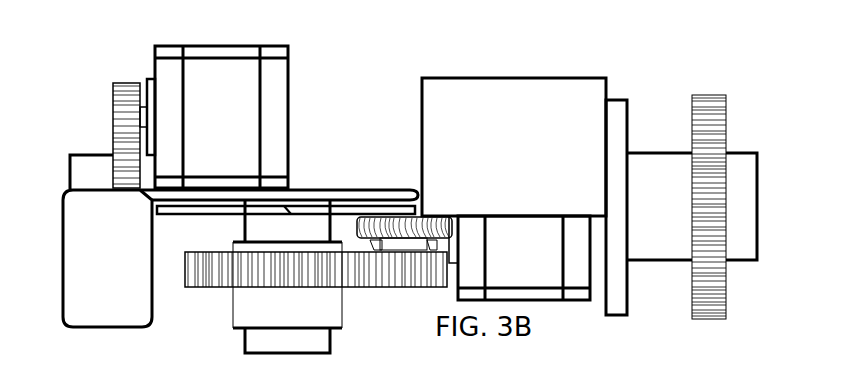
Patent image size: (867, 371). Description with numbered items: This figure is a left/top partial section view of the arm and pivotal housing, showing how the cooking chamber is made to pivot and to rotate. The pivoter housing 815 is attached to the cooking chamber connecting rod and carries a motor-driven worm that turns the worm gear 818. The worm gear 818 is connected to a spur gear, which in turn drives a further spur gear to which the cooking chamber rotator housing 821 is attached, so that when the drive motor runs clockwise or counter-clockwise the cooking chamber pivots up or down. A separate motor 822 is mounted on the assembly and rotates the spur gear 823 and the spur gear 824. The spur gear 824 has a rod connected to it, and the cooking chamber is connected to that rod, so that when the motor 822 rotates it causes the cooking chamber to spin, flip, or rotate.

The pivoter housing 815 is at (527, 108).
The worm gear 818 is at (395, 222).
The cooking chamber rotator housing 821 is at (322, 187).
The motor 822 is at (238, 83).
The spur gear 823 is at (128, 93).
The spur gear 824 is at (127, 173).